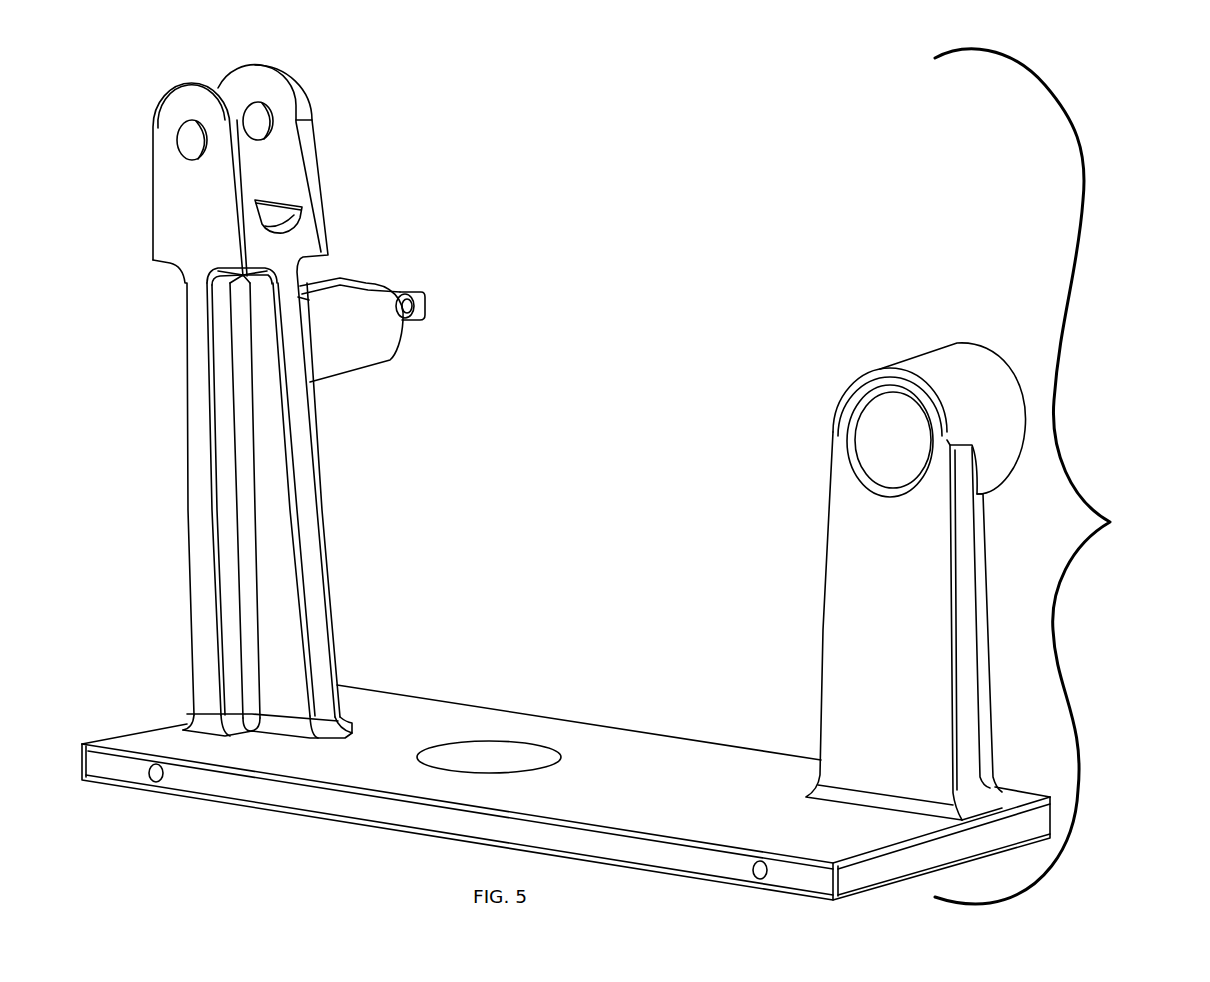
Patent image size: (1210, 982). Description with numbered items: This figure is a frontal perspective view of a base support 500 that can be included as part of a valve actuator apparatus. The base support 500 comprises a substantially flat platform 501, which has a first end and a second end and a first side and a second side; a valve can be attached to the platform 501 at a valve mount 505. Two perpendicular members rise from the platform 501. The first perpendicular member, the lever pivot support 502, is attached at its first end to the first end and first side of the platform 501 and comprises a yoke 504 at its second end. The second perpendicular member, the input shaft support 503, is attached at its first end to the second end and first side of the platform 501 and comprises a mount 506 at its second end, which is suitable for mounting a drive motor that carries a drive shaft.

The base support 500 is at (1110, 522).
The platform 501 is at (610, 757).
The lever pivot support 502 is at (187, 381).
The input shaft support 503 is at (857, 598).
The yoke 504 is at (162, 150).
The valve mount 505 is at (498, 753).
The mount 506 is at (877, 433).